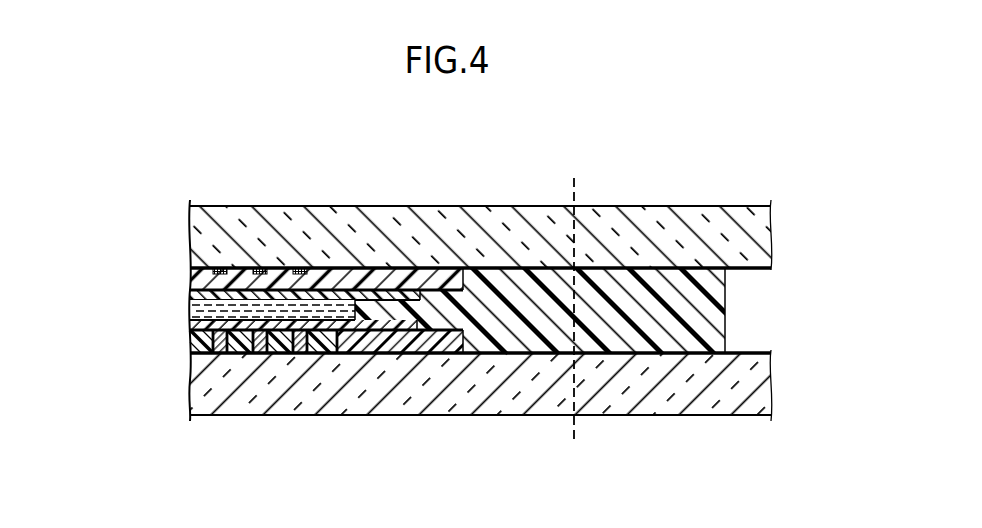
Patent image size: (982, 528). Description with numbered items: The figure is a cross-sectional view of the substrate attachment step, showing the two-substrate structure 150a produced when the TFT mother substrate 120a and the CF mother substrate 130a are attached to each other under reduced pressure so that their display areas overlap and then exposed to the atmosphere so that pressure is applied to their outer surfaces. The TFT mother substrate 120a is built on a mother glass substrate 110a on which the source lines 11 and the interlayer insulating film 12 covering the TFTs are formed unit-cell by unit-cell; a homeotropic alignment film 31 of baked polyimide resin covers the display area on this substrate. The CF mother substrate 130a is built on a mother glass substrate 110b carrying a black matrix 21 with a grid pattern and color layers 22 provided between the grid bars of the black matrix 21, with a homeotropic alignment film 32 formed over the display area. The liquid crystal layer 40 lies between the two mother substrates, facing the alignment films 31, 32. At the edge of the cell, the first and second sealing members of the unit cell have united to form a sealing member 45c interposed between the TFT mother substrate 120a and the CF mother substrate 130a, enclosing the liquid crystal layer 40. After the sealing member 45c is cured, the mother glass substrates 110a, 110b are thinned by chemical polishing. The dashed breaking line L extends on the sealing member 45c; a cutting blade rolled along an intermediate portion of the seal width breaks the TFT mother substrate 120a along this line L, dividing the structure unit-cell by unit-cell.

The source lines 11 is at (219, 268).
The interlayer insulating film 12 is at (388, 278).
The homeotropic alignment film 31 is at (416, 298).
The liquid crystal layer 40 is at (190, 312).
The homeotropic alignment film 32 is at (410, 330).
The black matrix 21 is at (364, 353).
The color layers 22 is at (242, 353).
The sealing member 45c is at (726, 300).
The mother glass substrate 110a is at (760, 233).
The mother glass substrate 110b is at (760, 387).
The TFT mother substrate 120a is at (183, 207).
The CF mother substrate 130a is at (183, 330).
The two-substrate structure 150a is at (106, 232).
The breaking line L is at (574, 190).